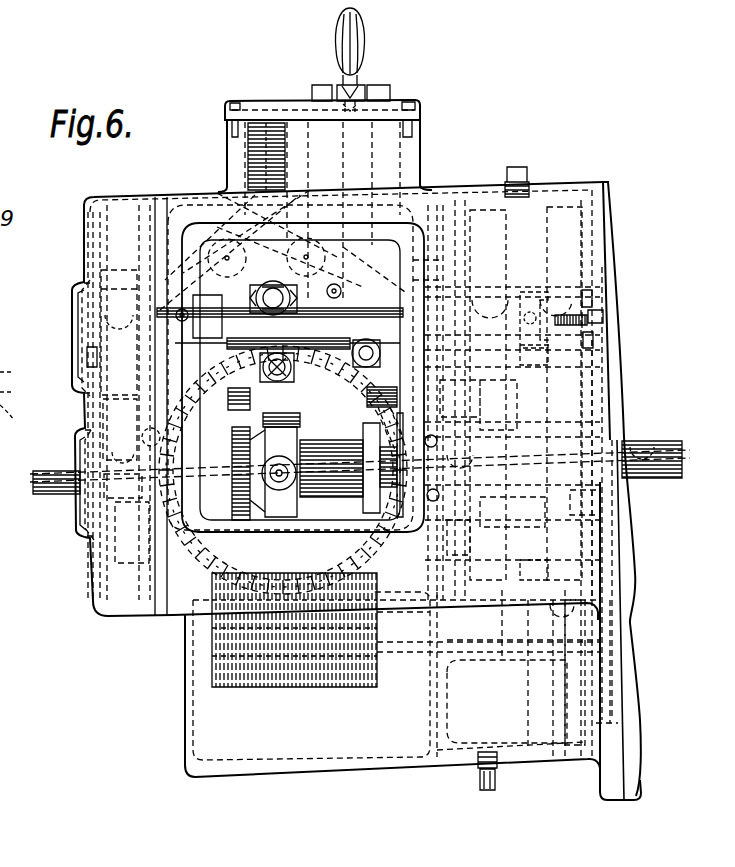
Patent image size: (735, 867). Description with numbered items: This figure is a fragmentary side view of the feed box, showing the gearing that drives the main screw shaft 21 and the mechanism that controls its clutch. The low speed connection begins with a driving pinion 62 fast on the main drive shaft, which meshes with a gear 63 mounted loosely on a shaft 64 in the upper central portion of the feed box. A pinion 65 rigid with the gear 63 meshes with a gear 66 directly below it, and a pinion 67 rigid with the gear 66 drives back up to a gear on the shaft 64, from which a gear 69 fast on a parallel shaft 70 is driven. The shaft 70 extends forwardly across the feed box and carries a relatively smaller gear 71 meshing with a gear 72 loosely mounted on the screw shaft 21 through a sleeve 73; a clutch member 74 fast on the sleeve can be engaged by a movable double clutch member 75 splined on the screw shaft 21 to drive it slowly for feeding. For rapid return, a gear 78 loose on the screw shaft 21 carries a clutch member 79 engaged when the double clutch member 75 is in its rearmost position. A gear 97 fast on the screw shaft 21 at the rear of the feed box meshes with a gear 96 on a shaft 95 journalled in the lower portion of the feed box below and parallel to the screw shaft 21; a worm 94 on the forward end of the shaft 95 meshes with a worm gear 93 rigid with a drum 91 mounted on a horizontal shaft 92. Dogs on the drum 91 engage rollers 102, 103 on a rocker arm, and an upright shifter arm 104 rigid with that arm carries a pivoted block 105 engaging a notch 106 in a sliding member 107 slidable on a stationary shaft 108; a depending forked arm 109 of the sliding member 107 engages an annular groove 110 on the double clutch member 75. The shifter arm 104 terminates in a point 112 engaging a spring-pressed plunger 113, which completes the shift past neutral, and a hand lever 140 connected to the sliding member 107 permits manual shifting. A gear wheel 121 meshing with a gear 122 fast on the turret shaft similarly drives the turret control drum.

The hand lever 140 is at (366, 50).
The plunger 113 is at (235, 195).
The point 112 is at (225, 205).
The roller 102 is at (152, 278).
The gear 71 is at (87, 275).
The roller 103 is at (418, 275).
The shifter arm 104 is at (337, 285).
The gear 69 is at (497, 237).
The gear 63 is at (578, 232).
The pinion 65 is at (530, 292).
The shaft 64 is at (583, 288).
The shaft 70 is at (280, 328).
The gear 78 is at (5, 388).
The gear 97 is at (15, 405).
The notch 106 is at (275, 385).
The block 105 is at (350, 364).
The stationary shaft 108 is at (472, 375).
The gear 66 is at (530, 365).
The sliding member 107 is at (306, 416).
The driving pinion 62 is at (612, 431).
The screw shaft 21 is at (668, 455).
The forked arm 109 is at (304, 472).
The sleeve 73 is at (85, 520).
The annular groove 110 is at (298, 508).
The pinion 67 is at (512, 512).
The gear 122 is at (600, 512).
The gear 72 is at (95, 572).
The clutch member 74 is at (200, 548).
The shaft 92 is at (288, 540).
The drum 91 is at (322, 533).
The double clutch member 75 is at (260, 535).
The clutch member 79 is at (398, 520).
The worm gear 93 is at (205, 578).
The shaft 95 is at (412, 655).
The worm 94 is at (305, 687).
The gear 96 is at (575, 695).
The gear wheel 121 is at (585, 697).